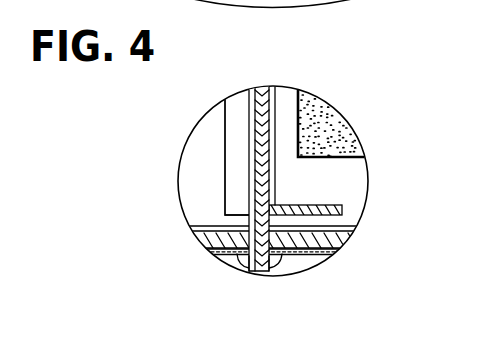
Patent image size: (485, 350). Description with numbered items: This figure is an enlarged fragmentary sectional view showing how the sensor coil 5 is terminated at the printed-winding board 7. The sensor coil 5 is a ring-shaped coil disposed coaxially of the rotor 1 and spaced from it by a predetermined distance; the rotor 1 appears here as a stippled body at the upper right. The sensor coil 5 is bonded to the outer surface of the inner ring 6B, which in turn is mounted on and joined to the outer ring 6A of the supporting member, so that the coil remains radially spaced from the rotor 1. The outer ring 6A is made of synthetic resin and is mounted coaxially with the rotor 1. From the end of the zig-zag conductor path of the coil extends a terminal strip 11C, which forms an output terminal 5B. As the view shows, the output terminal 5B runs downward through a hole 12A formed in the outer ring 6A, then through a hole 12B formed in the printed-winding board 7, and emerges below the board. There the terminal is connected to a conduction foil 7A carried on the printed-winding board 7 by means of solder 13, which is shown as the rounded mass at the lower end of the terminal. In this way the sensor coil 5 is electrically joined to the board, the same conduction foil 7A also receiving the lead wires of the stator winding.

The rotor 1 is at (340, 128).
The sensor coil 5 is at (249, 104).
The output terminals 5B is at (225, 192).
The terminal strips 11C is at (183, 163).
The outer ring 6A is at (198, 143).
The inner ring 6B is at (276, 98).
The printed-winding board 7 is at (342, 245).
The conduction foil 7A is at (310, 256).
The hole of the outer ring 12A is at (280, 208).
The hole of the printed-winding board 12B is at (268, 272).
The solder 13 is at (242, 265).